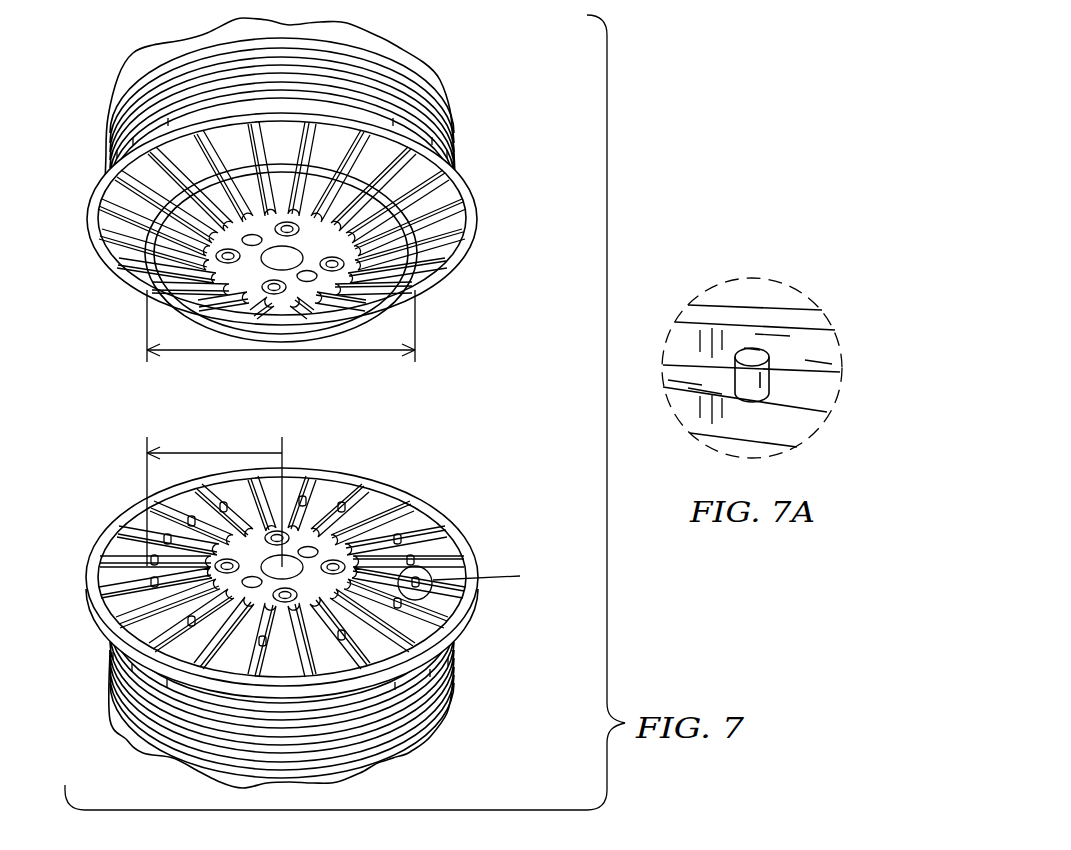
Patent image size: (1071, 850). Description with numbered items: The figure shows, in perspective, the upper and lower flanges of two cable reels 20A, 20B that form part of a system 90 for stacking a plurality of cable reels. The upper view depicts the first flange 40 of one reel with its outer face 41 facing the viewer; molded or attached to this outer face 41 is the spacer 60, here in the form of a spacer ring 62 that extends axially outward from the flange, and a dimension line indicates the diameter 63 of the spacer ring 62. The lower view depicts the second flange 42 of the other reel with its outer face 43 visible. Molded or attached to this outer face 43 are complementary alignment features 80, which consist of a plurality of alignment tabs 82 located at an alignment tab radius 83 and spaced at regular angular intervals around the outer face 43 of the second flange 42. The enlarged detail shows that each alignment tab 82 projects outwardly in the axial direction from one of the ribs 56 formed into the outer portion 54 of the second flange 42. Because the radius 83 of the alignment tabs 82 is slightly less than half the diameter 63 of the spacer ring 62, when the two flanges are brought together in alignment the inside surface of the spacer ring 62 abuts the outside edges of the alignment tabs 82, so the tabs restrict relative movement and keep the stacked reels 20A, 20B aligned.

In FIG. 7, the system for stacking a plurality of cable reels 90 is at (475, 70).
In FIG. 7, the cable reel 20A is at (484, 127).
In FIG. 7, the cable reel 20B is at (491, 546).
In FIG. 7, the first flange 40 is at (477, 233).
In FIG. 7, the outer face 41 is at (113, 291).
In FIG. 7, the second flange 42 is at (475, 624).
In FIG. 7, the outer face 43 is at (107, 520).
In FIG. 7, the outer portion 54 is at (130, 622).
In FIG. 7, the ribs 56 is at (193, 663).
In FIG. 7A, the ribs 56 is at (815, 398).
In FIG. 7, the spacer 60 is at (448, 188).
In FIG. 7, the spacer ring 62 is at (115, 186).
In FIG. 7, the diameter 63 is at (283, 352).
In FIG. 7, the alignment features 80 is at (352, 500).
In FIG. 7, the alignment tabs 82 is at (430, 513).
In FIG. 7A, the alignment tabs 82 is at (773, 358).
In FIG. 7, the alignment tab radius 83 is at (213, 453).